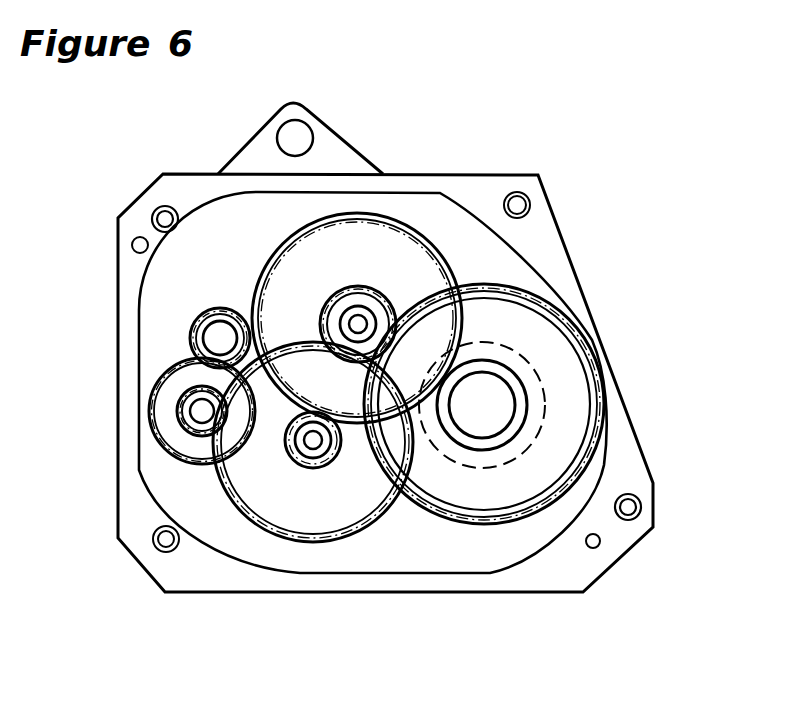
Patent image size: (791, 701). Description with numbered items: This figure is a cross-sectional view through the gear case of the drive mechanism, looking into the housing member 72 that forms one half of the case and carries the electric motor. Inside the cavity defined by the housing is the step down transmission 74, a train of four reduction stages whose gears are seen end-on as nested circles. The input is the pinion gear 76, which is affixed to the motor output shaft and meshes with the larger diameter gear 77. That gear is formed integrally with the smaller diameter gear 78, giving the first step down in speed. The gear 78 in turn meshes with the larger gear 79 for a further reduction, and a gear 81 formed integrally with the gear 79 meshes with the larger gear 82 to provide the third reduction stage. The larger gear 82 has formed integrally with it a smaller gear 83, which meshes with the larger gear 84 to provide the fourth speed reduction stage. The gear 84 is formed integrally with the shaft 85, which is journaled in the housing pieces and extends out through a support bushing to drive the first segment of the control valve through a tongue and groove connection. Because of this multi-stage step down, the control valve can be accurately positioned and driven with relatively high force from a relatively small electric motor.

The housing member 72 is at (137, 200).
The step down transmission 74 is at (518, 279).
The pinion gear 76 is at (203, 316).
The larger diameter gear 77 is at (149, 411).
The smaller diameter gear 78 is at (188, 432).
The larger gear 79 is at (305, 542).
The gear 81 is at (332, 462).
The larger gear 82 is at (410, 226).
The smaller gear 83 is at (388, 300).
The larger gear 84 is at (580, 337).
The shaft 85 is at (497, 412).